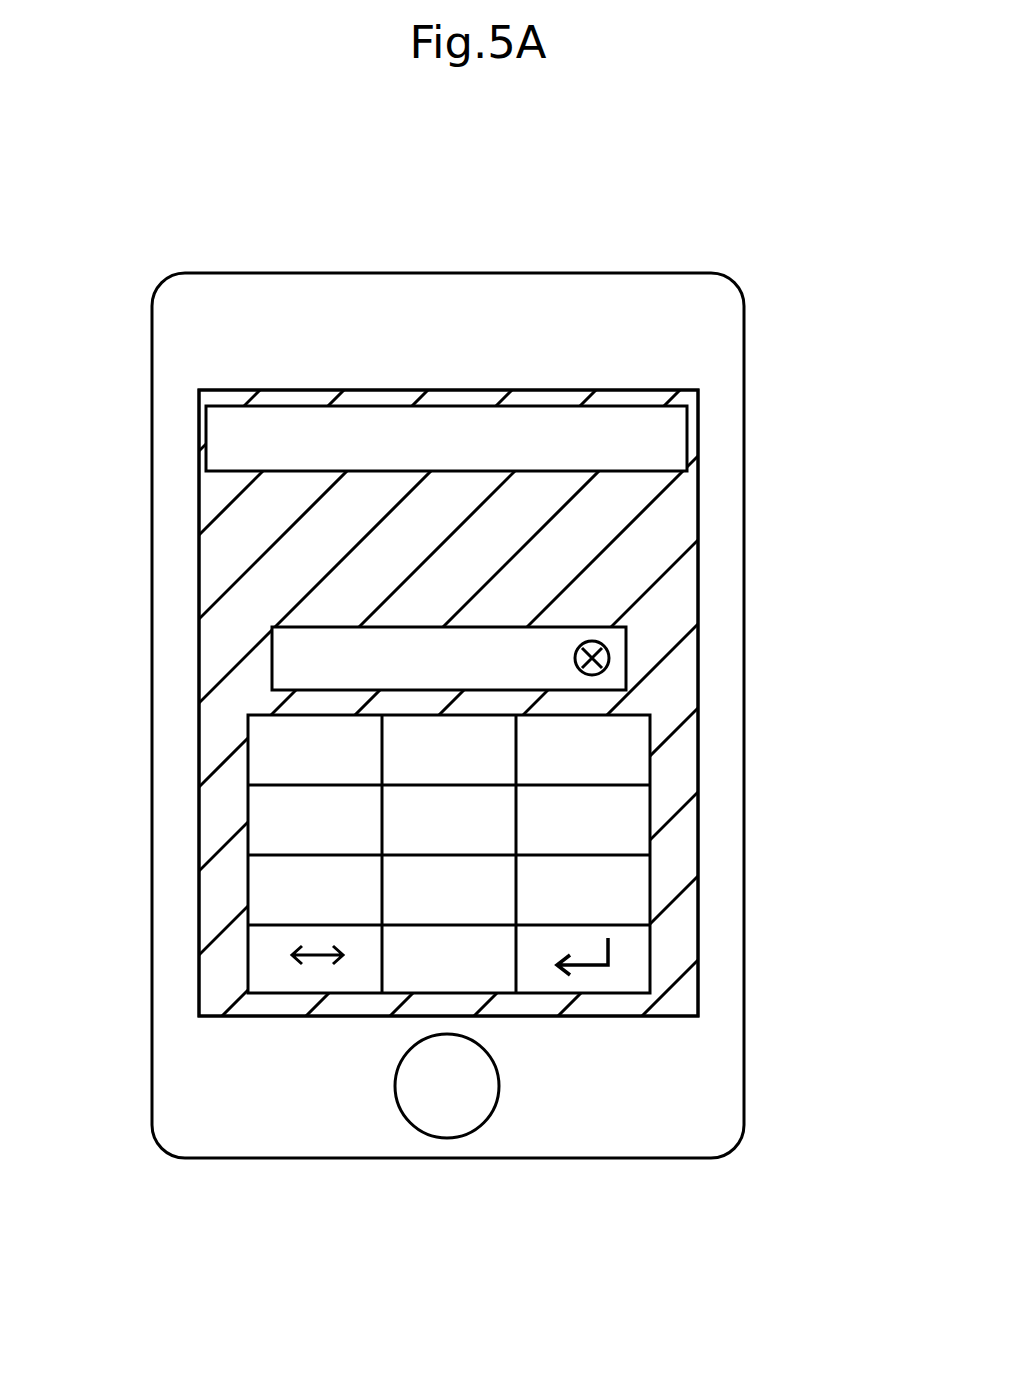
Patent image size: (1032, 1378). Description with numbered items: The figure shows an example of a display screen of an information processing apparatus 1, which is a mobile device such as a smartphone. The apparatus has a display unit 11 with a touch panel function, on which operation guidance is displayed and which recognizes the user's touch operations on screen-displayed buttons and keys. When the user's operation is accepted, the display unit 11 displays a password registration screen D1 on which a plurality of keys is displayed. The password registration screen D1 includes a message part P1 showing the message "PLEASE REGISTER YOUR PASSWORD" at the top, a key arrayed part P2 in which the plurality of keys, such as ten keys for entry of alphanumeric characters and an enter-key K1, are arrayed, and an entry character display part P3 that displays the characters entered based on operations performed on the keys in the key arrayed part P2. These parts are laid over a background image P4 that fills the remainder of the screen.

The information processing apparatus 1 is at (285, 1223).
The display unit 11 is at (698, 630).
The password registration screen D1 is at (698, 510).
The message part P1 is at (242, 478).
The key arrayed part P2 is at (448, 852).
The entry character display part P3 is at (272, 660).
The background image P4 is at (678, 765).
The enter-key K1 is at (630, 960).